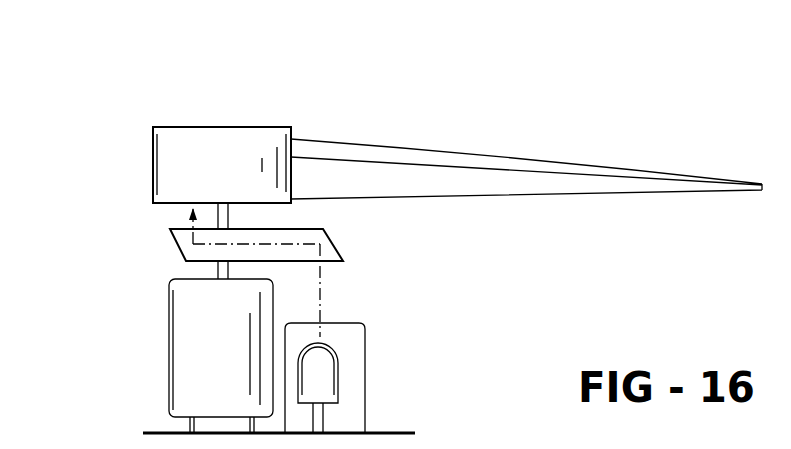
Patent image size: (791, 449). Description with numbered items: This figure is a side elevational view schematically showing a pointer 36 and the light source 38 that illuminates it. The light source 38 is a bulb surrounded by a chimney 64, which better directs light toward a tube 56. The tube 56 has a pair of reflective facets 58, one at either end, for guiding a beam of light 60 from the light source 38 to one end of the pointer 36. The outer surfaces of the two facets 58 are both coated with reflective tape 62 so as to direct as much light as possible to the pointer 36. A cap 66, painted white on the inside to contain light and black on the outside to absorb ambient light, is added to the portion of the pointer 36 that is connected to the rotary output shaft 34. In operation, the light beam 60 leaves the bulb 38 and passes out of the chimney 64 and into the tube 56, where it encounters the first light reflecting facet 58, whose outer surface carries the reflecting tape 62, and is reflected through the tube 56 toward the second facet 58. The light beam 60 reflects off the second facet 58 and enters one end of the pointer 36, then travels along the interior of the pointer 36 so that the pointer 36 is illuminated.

The cap 66 is at (252, 127).
The pointer 36 is at (543, 160).
The rotary output shaft 34 is at (213, 212).
The tube 56 is at (342, 228).
The reflective tape 62 is at (170, 246).
The reflective facets 58 is at (177, 252).
The beam of light 60 is at (325, 295).
The light source 38 is at (340, 365).
The chimney 64 is at (365, 397).